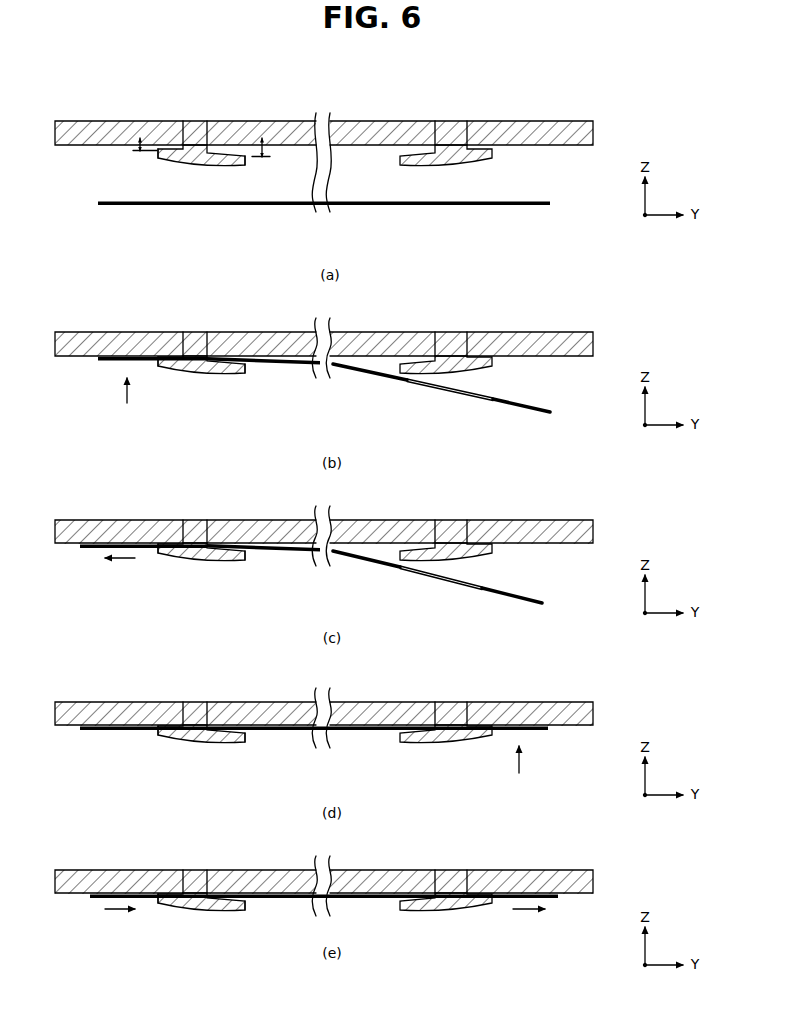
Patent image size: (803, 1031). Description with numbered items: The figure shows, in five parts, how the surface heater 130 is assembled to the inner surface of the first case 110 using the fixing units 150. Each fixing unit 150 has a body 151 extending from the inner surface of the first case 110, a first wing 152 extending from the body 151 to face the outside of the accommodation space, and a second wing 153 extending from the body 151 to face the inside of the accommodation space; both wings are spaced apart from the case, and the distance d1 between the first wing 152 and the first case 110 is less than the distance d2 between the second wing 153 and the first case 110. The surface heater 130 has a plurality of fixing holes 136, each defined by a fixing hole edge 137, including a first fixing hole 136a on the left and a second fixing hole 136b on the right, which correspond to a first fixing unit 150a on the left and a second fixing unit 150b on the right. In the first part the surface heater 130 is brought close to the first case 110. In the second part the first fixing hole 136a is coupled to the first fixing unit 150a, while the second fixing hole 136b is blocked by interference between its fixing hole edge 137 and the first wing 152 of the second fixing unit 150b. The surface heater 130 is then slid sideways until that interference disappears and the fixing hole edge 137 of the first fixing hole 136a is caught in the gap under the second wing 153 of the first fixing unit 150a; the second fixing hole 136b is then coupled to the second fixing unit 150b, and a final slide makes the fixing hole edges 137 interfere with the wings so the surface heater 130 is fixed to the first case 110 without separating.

The first case 110 is at (358, 132).
The surface heater 130 is at (330, 582).
The fixing holes 136 is at (324, 584).
The first fixing hole 136a is at (199, 206).
The second fixing hole 136b is at (443, 206).
The fixing hole edge 137 is at (159, 206).
The fixing units 150 is at (324, 536).
The first fixing unit 150a is at (150, 536).
The second fixing unit 150b is at (498, 165).
The body 151 is at (201, 142).
The first wing 152 is at (165, 149).
The second wing 153 is at (240, 154).
The distance between first wing and case inner surface d1 is at (138, 150).
The distance between second wing and case inner surface d2 is at (268, 153).